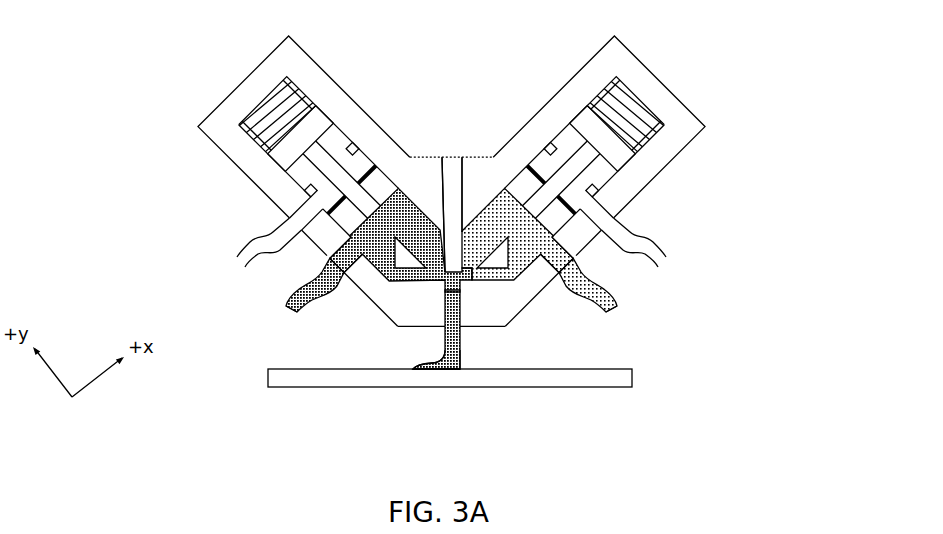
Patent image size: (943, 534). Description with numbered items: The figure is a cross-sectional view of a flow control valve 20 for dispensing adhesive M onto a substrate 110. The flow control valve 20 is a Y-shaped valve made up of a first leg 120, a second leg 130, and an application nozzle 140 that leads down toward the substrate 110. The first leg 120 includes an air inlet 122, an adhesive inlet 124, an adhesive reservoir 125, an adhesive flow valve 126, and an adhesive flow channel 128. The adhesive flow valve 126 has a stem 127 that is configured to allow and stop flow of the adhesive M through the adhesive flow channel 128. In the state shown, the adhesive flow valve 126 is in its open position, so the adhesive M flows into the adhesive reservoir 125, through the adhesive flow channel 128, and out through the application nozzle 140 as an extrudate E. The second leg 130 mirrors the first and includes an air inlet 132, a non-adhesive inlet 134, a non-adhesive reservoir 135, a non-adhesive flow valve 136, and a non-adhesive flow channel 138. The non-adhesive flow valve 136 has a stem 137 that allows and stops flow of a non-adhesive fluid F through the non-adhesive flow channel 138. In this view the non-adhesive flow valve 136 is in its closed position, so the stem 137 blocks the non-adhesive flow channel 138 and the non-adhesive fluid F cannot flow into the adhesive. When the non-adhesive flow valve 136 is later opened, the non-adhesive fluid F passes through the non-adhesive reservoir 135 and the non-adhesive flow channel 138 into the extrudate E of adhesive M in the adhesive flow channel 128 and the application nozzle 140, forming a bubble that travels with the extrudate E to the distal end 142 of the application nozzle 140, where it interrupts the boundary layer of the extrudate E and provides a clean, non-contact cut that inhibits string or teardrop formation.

The flow control valve 20 is at (778, 44).
The substrate 110 is at (321, 395).
The first leg 120 is at (200, 143).
The air inlet 122 is at (290, 217).
The adhesive inlet 124 is at (350, 287).
The adhesive reservoir 125 is at (407, 203).
The adhesive flow valve 126 is at (336, 108).
The stem 127 is at (323, 157).
The adhesive flow channel 128 is at (438, 288).
The second leg 130 is at (703, 143).
The air inlet 132 is at (610, 225).
The non-adhesive inlet 134 is at (553, 281).
The non-adhesive reservoir 135 is at (497, 209).
The non-adhesive flow valve 136 is at (548, 124).
The stem 137 is at (537, 192).
The non-adhesive flow channel 138 is at (466, 290).
The application nozzle 140 is at (445, 348).
The distal end 142 is at (460, 358).
The extrudate E is at (450, 290).
The adhesive M is at (292, 306).
The non-adhesive fluid F is at (626, 318).